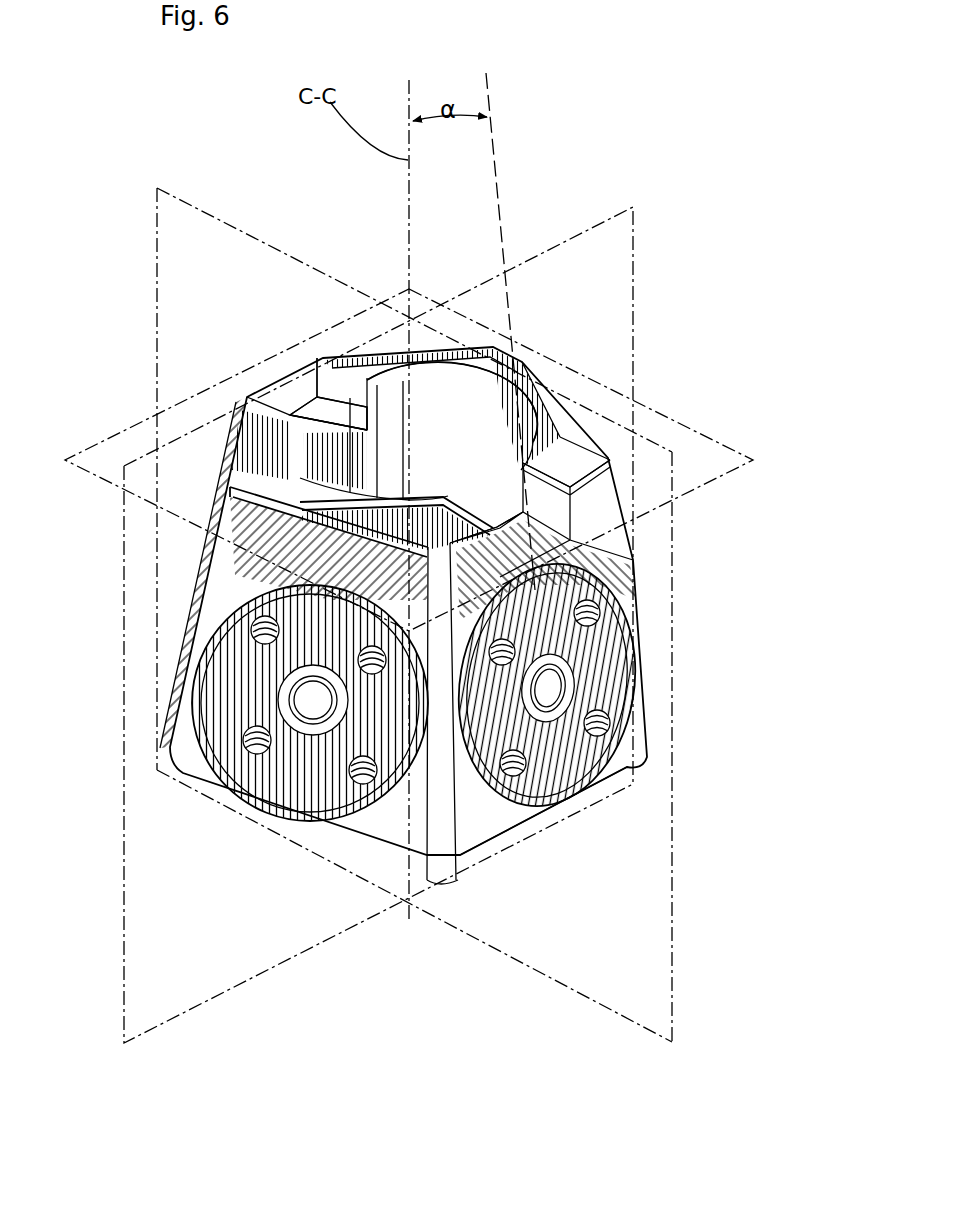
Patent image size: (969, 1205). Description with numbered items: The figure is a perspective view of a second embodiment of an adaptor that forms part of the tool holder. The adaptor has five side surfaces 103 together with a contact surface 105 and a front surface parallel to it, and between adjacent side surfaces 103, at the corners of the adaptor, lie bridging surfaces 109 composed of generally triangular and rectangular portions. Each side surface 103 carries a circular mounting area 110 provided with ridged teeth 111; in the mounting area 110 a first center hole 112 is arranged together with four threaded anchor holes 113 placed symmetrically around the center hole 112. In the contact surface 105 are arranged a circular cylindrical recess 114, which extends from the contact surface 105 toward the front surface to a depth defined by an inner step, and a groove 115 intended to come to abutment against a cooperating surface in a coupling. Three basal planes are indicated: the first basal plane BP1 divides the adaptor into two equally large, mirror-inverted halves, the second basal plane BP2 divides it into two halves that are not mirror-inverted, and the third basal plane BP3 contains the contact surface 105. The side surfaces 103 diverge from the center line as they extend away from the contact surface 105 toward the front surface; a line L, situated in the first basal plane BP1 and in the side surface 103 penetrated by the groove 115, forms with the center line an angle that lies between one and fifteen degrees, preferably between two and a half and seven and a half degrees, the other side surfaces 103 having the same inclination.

The side surfaces 103 is at (382, 665).
The contact surface 105 is at (537, 395).
The bridging surfaces 109 is at (448, 745).
The mounting area 110 is at (226, 598).
The ridged teeth 111 is at (535, 720).
The first center hole 112 is at (548, 690).
The threaded anchor holes 113 is at (592, 606).
The circular cylindrical recess 114 is at (397, 400).
The groove 115 is at (297, 407).
The first basal plane BP1 is at (183, 252).
The second basal plane BP2 is at (143, 857).
The third basal plane BP3 is at (707, 462).
The line L is at (496, 138).